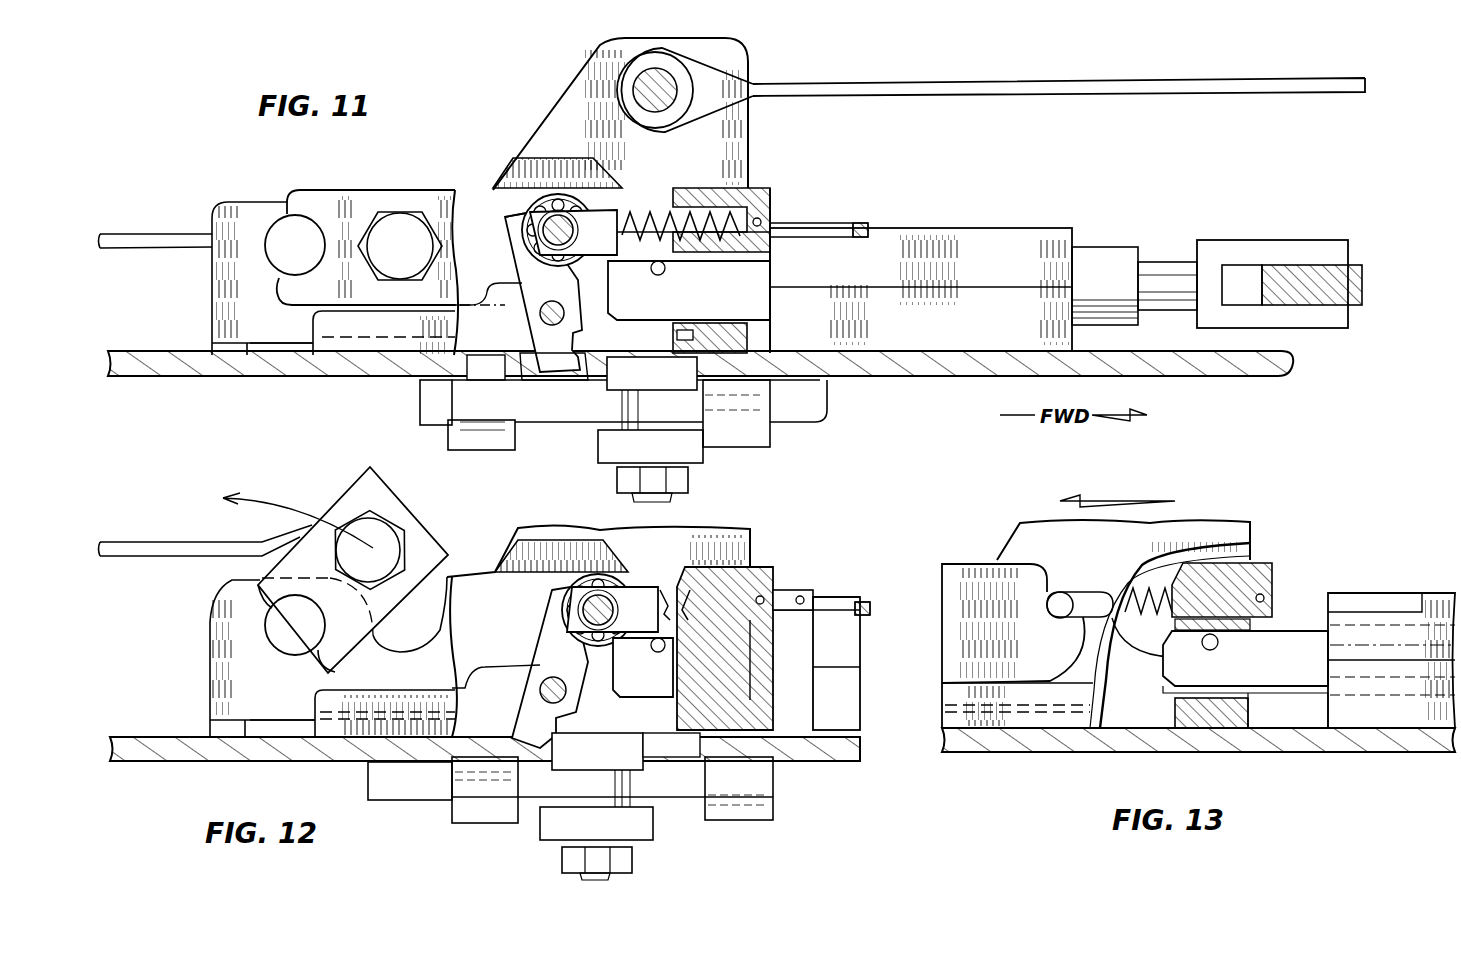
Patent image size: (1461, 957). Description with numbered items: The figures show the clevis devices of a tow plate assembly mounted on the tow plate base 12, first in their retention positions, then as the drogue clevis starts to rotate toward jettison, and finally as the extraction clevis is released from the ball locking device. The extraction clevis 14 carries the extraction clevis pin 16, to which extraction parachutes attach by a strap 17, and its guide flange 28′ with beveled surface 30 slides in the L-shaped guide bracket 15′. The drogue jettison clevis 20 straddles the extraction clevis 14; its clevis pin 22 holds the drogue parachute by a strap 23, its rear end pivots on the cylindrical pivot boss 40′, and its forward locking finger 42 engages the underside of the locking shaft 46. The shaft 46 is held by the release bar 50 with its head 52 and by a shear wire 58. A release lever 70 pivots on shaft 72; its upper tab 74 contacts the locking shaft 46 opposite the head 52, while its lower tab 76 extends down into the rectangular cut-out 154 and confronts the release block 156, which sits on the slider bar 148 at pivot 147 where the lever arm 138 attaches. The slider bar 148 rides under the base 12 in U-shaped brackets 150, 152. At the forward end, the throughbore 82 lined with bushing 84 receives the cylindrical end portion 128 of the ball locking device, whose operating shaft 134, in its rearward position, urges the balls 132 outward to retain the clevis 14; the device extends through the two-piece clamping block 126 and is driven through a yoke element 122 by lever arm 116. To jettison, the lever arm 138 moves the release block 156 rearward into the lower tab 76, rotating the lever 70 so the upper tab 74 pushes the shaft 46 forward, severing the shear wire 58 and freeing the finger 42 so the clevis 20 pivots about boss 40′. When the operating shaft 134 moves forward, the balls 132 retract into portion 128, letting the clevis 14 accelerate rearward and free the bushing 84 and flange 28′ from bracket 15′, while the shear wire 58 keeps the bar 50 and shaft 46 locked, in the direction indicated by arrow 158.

In FIG. 11, the tow plate base 12 is at (950, 378).
In FIG. 12, the tow plate base 12 is at (340, 765).
In FIG. 13, the tow plate base 12 is at (1250, 754).
In FIG. 11, the extraction clevis member 14 is at (530, 114).
In FIG. 13, the extraction clevis member 14 is at (1035, 538).
In FIG. 11, the L-shaped guide bracket 15′ is at (325, 323).
In FIG. 12, the L-shaped guide bracket 15′ is at (375, 690).
In FIG. 13, the L-shaped guide bracket 15′ is at (960, 697).
In FIG. 11, the extraction clevis pin 16 is at (660, 62).
In FIG. 11, the strap 17 is at (822, 90).
In FIG. 11, the drogue jettison clevis 20 is at (364, 170).
In FIG. 12, the drogue jettison clevis 20 is at (322, 489).
In FIG. 13, the drogue jettison clevis 20 is at (960, 575).
In FIG. 11, the clevis pin 22 is at (404, 213).
In FIG. 12, the clevis pin 22 is at (408, 545).
In FIG. 11, the strap 23 is at (136, 236).
In FIG. 12, the strap 23 is at (206, 545).
In FIG. 11, the longitudinal guide flange 28′ is at (258, 350).
In FIG. 12, the longitudinal guide flange 28′ is at (282, 725).
In FIG. 11, the beveled surface 30 is at (228, 351).
In FIG. 12, the beveled surface 30 is at (228, 733).
In FIG. 11, the cylindrical pivot boss 40′ is at (280, 215).
In FIG. 12, the cylindrical pivot boss 40′ is at (280, 620).
In FIG. 13, the locking finger 42 is at (1080, 622).
In FIG. 11, the locking shaft 46 is at (578, 230).
In FIG. 12, the locking shaft 46 is at (617, 610).
In FIG. 13, the locking shaft 46 is at (1068, 587).
In FIG. 11, the release bar 50 is at (655, 214).
In FIG. 12, the release bar 50 is at (783, 590).
In FIG. 13, the release bar 50 is at (1125, 602).
In FIG. 11, the head of release bar 52 is at (600, 212).
In FIG. 12, the head of release bar 52 is at (640, 588).
In FIG. 11, the shear wire 58 is at (762, 222).
In FIG. 12, the shear wire 58 is at (830, 598).
In FIG. 13, the shear wire 58 is at (1264, 598).
In FIG. 11, the release lever 70 is at (540, 270).
In FIG. 12, the release lever 70 is at (558, 648).
In FIG. 12, the shaft 72 is at (542, 688).
In FIG. 11, the upper tab 74 is at (515, 230).
In FIG. 12, the upper tab 74 is at (550, 605).
In FIG. 11, the lower tab 76 is at (548, 372).
In FIG. 12, the lower tab 76 is at (597, 751).
In FIG. 11, the throughbore 82 is at (735, 325).
In FIG. 11, the bushing 84 is at (680, 330).
In FIG. 13, the bushing 84 is at (1172, 703).
In FIG. 11, the lever arm 116 is at (1350, 275).
In FIG. 11, the yoke element 122 is at (1228, 250).
In FIG. 11, the two-piece clamping block 126 is at (1022, 245).
In FIG. 13, the two-piece clamping block 126 is at (1433, 612).
In FIG. 11, the cylindrical end portion 128 is at (630, 318).
In FIG. 12, the cylindrical end portion 128 is at (643, 667).
In FIG. 13, the cylindrical end portion 128 is at (1285, 652).
In FIG. 11, the balls 132 is at (666, 270).
In FIG. 11, the operating shaft 134 is at (1158, 270).
In FIG. 11, the lever arm 138 is at (615, 445).
In FIG. 12, the lever arm 138 is at (640, 825).
In FIG. 11, the pivot 147 is at (672, 500).
In FIG. 12, the pivot 147 is at (620, 880).
In FIG. 11, the slider bar 148 is at (430, 400).
In FIG. 12, the slider bar 148 is at (418, 795).
In FIG. 11, the U-shaped bracket 150 is at (495, 432).
In FIG. 12, the U-shaped bracket 150 is at (468, 822).
In FIG. 11, the U-shaped bracket 152 is at (755, 430).
In FIG. 12, the U-shaped bracket 152 is at (775, 810).
In FIG. 11, the rectangular cut-out 154 is at (500, 365).
In FIG. 12, the rectangular cut-out 154 is at (680, 760).
In FIG. 11, the release block 156 is at (625, 375).
In FIG. 12, the release block 156 is at (617, 748).
In FIG. 13, the direction arrow 158 is at (1133, 498).